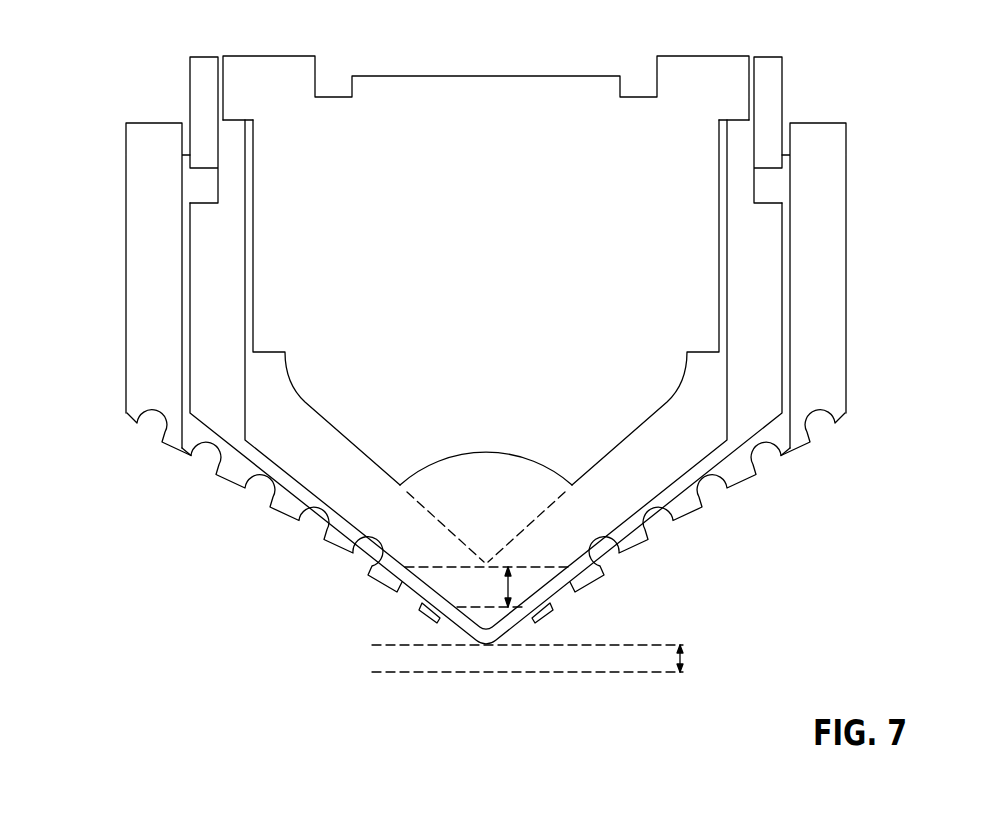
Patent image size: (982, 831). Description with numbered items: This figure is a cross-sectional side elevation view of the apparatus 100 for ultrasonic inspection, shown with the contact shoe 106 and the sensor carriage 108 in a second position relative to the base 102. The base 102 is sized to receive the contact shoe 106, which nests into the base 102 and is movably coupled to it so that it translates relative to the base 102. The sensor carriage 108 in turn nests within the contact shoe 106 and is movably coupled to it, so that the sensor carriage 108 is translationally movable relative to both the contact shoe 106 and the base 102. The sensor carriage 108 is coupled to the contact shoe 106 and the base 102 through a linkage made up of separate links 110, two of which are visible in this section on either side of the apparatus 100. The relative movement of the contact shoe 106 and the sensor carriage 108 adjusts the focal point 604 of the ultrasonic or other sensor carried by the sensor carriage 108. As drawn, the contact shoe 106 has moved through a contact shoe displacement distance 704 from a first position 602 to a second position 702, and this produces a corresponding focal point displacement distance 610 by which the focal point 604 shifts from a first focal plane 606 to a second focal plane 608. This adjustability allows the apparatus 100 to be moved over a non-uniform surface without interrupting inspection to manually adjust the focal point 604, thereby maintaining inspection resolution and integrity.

The apparatus 100 is at (158, 47).
The base 102 is at (122, 190).
The contact shoe 106 is at (186, 316).
The sensor carriage 108 is at (405, 72).
The link 110 is at (211, 57).
The first position 602 is at (567, 673).
The focal point 604 is at (483, 567).
The first focal plane 606 is at (472, 603).
The second focal plane 608 is at (437, 567).
The focal point displacement distance 610 is at (512, 582).
The second position 702 is at (566, 646).
The contact shoe displacement distance 704 is at (683, 659).